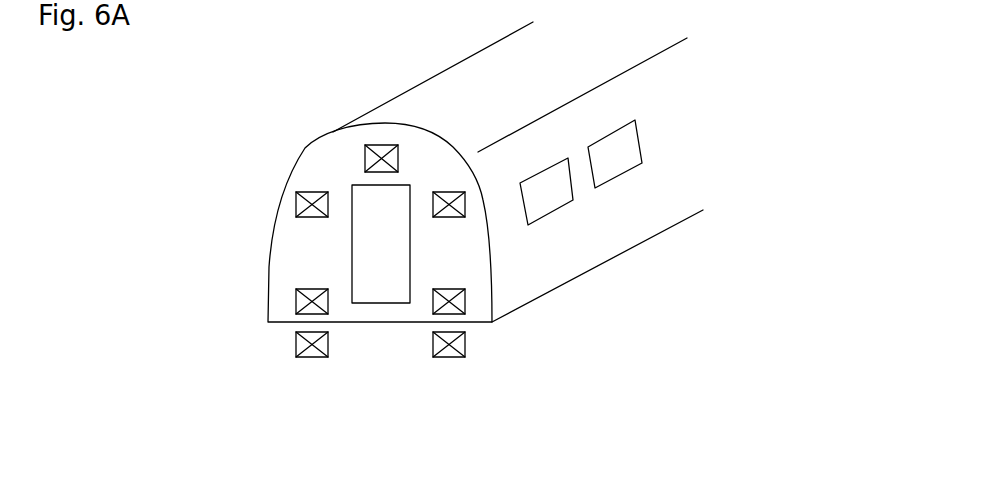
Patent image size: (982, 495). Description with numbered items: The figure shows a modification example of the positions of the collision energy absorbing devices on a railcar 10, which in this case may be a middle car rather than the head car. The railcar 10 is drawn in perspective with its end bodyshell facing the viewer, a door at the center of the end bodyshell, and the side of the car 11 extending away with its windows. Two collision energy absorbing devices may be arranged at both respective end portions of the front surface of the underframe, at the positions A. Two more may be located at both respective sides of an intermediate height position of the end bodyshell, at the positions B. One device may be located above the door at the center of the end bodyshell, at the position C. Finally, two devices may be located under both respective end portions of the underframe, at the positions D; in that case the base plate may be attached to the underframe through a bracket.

The railcar 10 is at (242, 112).
The vehicle body side surface 11 is at (620, 235).
The positions A is at (295, 303).
The positions B is at (295, 202).
The position C is at (383, 145).
The positions D is at (310, 357).